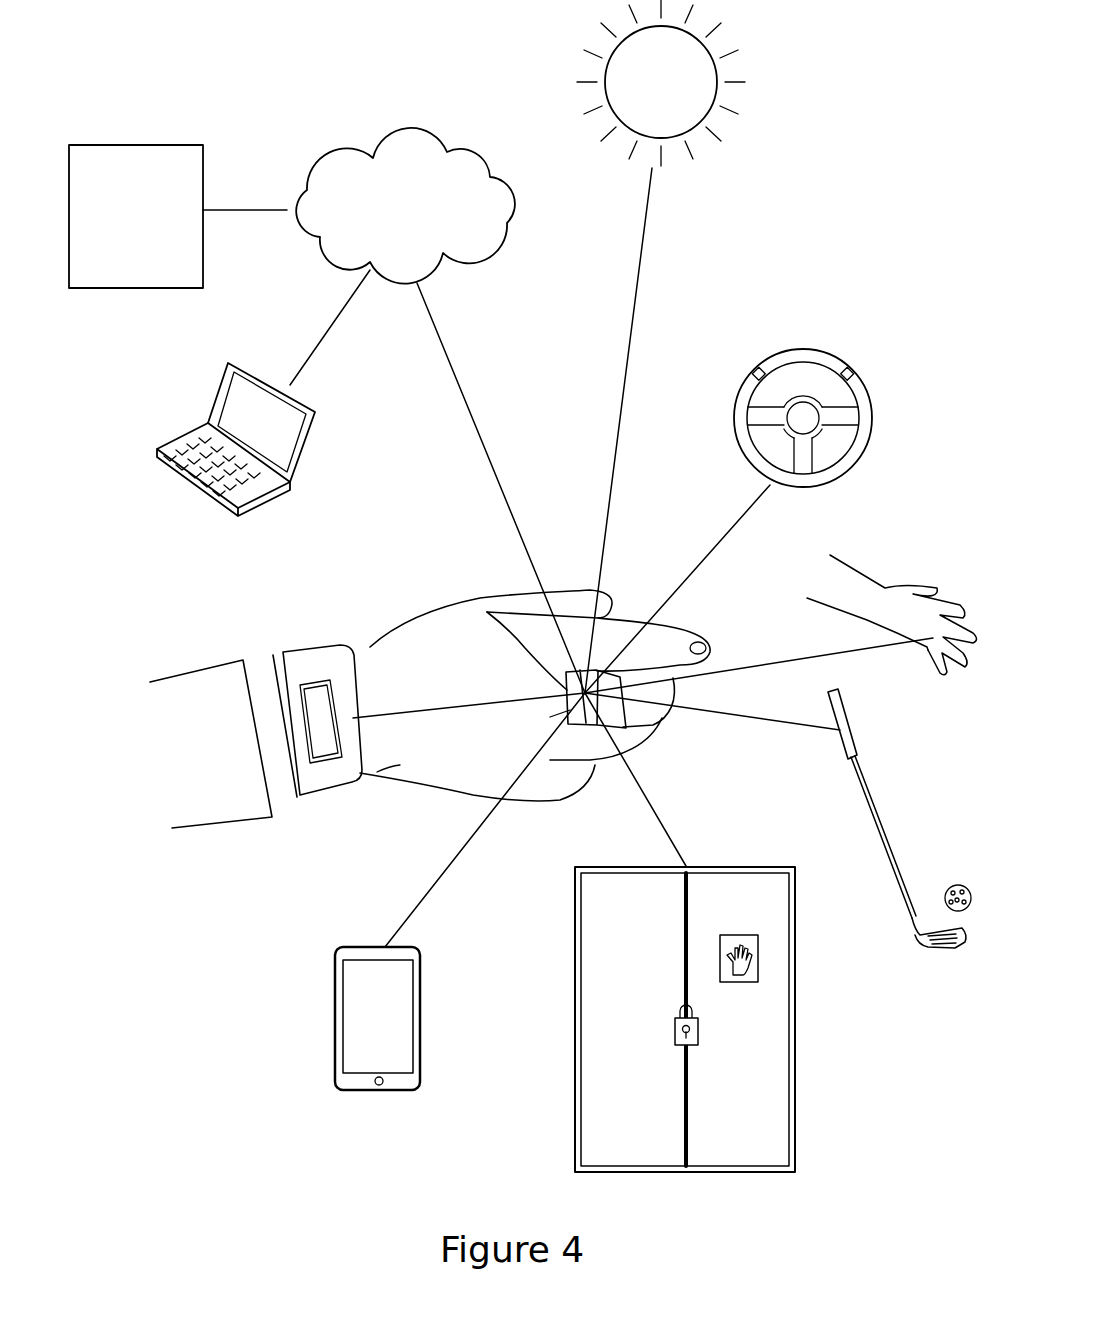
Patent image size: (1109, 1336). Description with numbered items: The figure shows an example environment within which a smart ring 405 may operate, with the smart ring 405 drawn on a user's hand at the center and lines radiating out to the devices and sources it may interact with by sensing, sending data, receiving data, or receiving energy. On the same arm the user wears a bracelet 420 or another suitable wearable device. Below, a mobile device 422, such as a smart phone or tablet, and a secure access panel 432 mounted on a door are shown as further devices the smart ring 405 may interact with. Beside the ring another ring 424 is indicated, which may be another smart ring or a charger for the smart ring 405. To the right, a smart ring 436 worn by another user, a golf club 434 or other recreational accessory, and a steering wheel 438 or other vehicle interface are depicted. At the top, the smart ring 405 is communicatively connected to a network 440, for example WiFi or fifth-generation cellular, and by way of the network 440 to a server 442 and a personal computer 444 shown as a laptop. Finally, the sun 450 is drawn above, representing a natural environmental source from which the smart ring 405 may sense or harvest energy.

The smart ring 405 is at (500, 595).
The bracelet 420 is at (352, 682).
The mobile device 422 is at (420, 996).
The another ring 424 is at (626, 717).
The secure access panel 432 is at (758, 960).
The golf club 434 is at (878, 800).
The smart ring worn by another user 436 is at (937, 640).
The steering wheel 438 is at (812, 350).
The network 440 is at (412, 128).
The server 442 is at (150, 145).
The personal computer 444 is at (190, 500).
The sun 450 is at (718, 60).